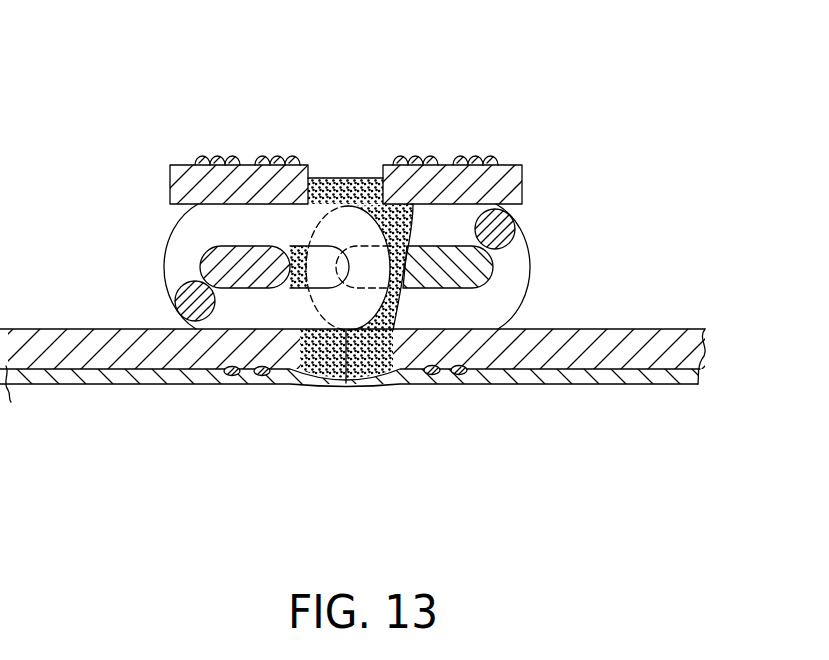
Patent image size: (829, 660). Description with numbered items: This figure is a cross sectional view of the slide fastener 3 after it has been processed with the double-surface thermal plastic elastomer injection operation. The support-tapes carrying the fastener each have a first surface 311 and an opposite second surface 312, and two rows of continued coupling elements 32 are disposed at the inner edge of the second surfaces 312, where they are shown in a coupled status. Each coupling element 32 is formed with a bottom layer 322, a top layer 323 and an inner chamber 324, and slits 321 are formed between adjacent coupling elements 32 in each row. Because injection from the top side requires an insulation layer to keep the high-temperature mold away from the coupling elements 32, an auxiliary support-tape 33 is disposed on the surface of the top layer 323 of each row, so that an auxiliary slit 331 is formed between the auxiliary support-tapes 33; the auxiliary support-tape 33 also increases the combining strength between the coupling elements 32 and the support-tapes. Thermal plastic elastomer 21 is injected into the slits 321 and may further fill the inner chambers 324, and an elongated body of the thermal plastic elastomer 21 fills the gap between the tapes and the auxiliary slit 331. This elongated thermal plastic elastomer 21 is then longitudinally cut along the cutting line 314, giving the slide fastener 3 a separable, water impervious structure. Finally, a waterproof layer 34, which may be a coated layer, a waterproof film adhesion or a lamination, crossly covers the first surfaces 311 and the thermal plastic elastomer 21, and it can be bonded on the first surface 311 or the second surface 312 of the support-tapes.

The slide fastener 3 is at (371, 320).
The first surface 311 is at (600, 372).
The second surface 312 is at (613, 328).
The cutting line 314 is at (345, 205).
The thermal plastic elastomer 21 is at (393, 238).
The coupling elements 32 is at (520, 280).
The slits 321 is at (447, 230).
The bottom layer 322 is at (240, 305).
The top layer 323 is at (220, 222).
The inner chamber 324 is at (440, 290).
The auxiliary support-tape 33 is at (243, 175).
The auxiliary slit 331 is at (323, 170).
The waterproof layer 34 is at (508, 377).